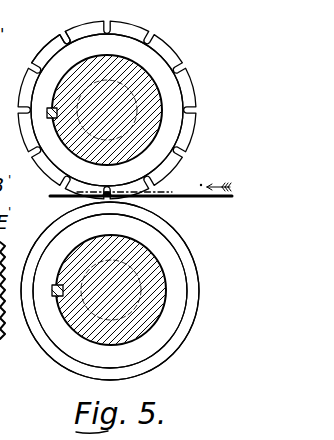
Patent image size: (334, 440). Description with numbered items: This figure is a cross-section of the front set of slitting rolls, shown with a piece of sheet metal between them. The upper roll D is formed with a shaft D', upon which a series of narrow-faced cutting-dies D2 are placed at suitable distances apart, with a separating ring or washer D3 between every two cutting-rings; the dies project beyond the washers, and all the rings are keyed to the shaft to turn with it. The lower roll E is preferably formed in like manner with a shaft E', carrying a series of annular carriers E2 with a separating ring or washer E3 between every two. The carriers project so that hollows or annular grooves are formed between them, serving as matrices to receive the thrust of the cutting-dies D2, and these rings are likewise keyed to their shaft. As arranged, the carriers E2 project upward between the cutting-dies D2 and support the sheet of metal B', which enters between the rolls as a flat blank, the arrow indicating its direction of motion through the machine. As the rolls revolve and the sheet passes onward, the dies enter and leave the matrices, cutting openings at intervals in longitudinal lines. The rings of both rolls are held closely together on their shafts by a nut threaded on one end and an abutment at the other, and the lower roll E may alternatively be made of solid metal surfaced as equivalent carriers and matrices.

The upper roll D is at (123, 110).
The shaft D' is at (50, 94).
The cutting-dies D2 is at (53, 44).
The separating ring or washer D3 is at (183, 132).
The lower roll E is at (124, 291).
The shaft E' is at (58, 269).
The annular carriers E2 is at (57, 223).
The separating ring or washer E3 is at (173, 337).
The sheet of metal B' is at (141, 206).